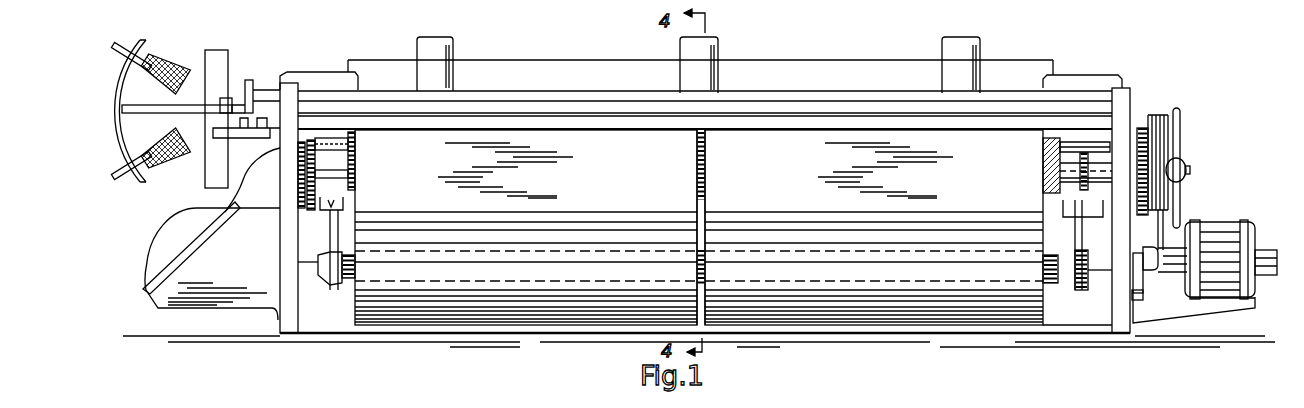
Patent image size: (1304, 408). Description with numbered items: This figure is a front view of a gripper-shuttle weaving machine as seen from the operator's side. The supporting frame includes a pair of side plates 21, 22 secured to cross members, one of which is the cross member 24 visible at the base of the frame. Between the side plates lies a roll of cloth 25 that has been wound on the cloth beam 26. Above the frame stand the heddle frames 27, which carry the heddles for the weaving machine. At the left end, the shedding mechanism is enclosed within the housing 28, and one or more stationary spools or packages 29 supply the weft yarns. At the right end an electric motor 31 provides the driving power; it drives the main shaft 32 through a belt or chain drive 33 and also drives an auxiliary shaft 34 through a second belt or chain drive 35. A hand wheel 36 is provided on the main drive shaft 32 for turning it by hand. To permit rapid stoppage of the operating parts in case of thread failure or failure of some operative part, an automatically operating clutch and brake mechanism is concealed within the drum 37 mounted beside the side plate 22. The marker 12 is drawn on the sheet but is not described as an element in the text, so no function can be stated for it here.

The section line arrow 12 is at (1153, 110).
The side plate 21 is at (292, 314).
The side plate 22 is at (1128, 326).
The cross member 24 is at (1088, 324).
The roll of cloth 25 is at (989, 228).
The cloth beam 26 is at (1055, 255).
The heddle frame 27 is at (432, 46).
The housing 28 is at (172, 236).
The stationary spool 29 is at (183, 68).
The electric motor 31 is at (1225, 232).
The main shaft 32 is at (1099, 180).
The belt or chain drive 33 is at (1162, 113).
The auxiliary shaft 34 is at (1138, 305).
The belt or chain drive 35 is at (1143, 283).
The hand wheel 36 is at (1181, 122).
The drum 37 is at (1140, 127).